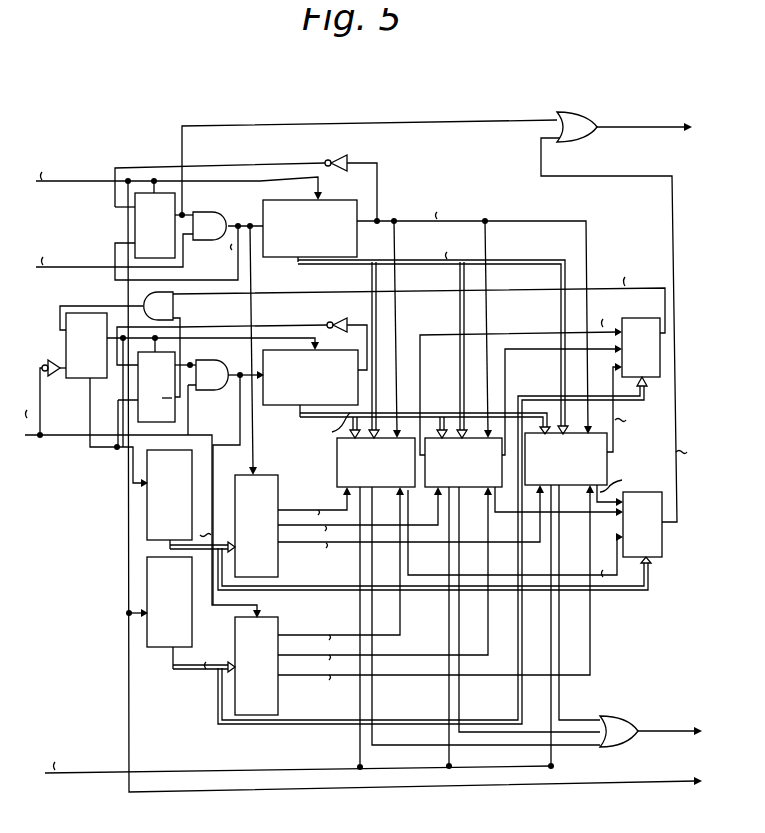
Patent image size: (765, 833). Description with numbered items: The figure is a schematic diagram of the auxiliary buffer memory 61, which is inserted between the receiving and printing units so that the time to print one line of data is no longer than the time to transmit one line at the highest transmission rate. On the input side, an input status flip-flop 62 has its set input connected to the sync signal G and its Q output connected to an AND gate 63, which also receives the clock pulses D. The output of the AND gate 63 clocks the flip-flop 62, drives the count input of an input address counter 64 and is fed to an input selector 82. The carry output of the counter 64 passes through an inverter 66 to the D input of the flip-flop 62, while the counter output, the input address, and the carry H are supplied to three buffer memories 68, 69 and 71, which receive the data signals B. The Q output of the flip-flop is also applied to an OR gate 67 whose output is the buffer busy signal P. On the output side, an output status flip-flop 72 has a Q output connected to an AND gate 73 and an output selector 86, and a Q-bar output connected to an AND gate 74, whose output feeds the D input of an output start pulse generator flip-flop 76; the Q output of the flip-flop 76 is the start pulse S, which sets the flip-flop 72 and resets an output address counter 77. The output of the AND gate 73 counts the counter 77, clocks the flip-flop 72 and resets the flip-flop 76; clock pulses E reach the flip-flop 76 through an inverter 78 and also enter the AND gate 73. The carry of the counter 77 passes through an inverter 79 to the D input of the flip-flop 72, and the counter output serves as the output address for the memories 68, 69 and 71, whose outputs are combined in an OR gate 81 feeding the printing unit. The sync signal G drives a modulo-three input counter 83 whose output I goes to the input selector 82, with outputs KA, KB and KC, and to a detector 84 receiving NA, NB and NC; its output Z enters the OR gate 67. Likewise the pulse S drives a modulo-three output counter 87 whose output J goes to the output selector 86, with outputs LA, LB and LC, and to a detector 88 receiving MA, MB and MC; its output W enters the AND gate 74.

The auxiliary buffer memory 61 is at (234, 106).
The input status flip-flop 62 is at (145, 193).
The AND gate 63 is at (210, 213).
The input address counter 64 is at (284, 199).
The inverter 66 is at (338, 156).
The OR gate 67 is at (578, 112).
The buffer memory 68 is at (383, 487).
The buffer memory 69 is at (472, 488).
The buffer memory 71 is at (570, 487).
The output status flip-flop 72 is at (150, 422).
The AND gate 73 is at (220, 361).
The AND gate 74 is at (177, 310).
The output start pulse generator flip-flop 76 is at (86, 313).
The output address counter 77 is at (284, 350).
The inverter 78 is at (48, 363).
The inverter 79 is at (340, 314).
The OR gate 81 is at (622, 714).
The input selector 82 is at (275, 475).
The modulo-3 input counter 83 is at (147, 540).
The detector 84 is at (662, 543).
The output selector 86 is at (286, 609).
The modulo-3 output counter 87 is at (148, 647).
The detector 88 is at (665, 333).